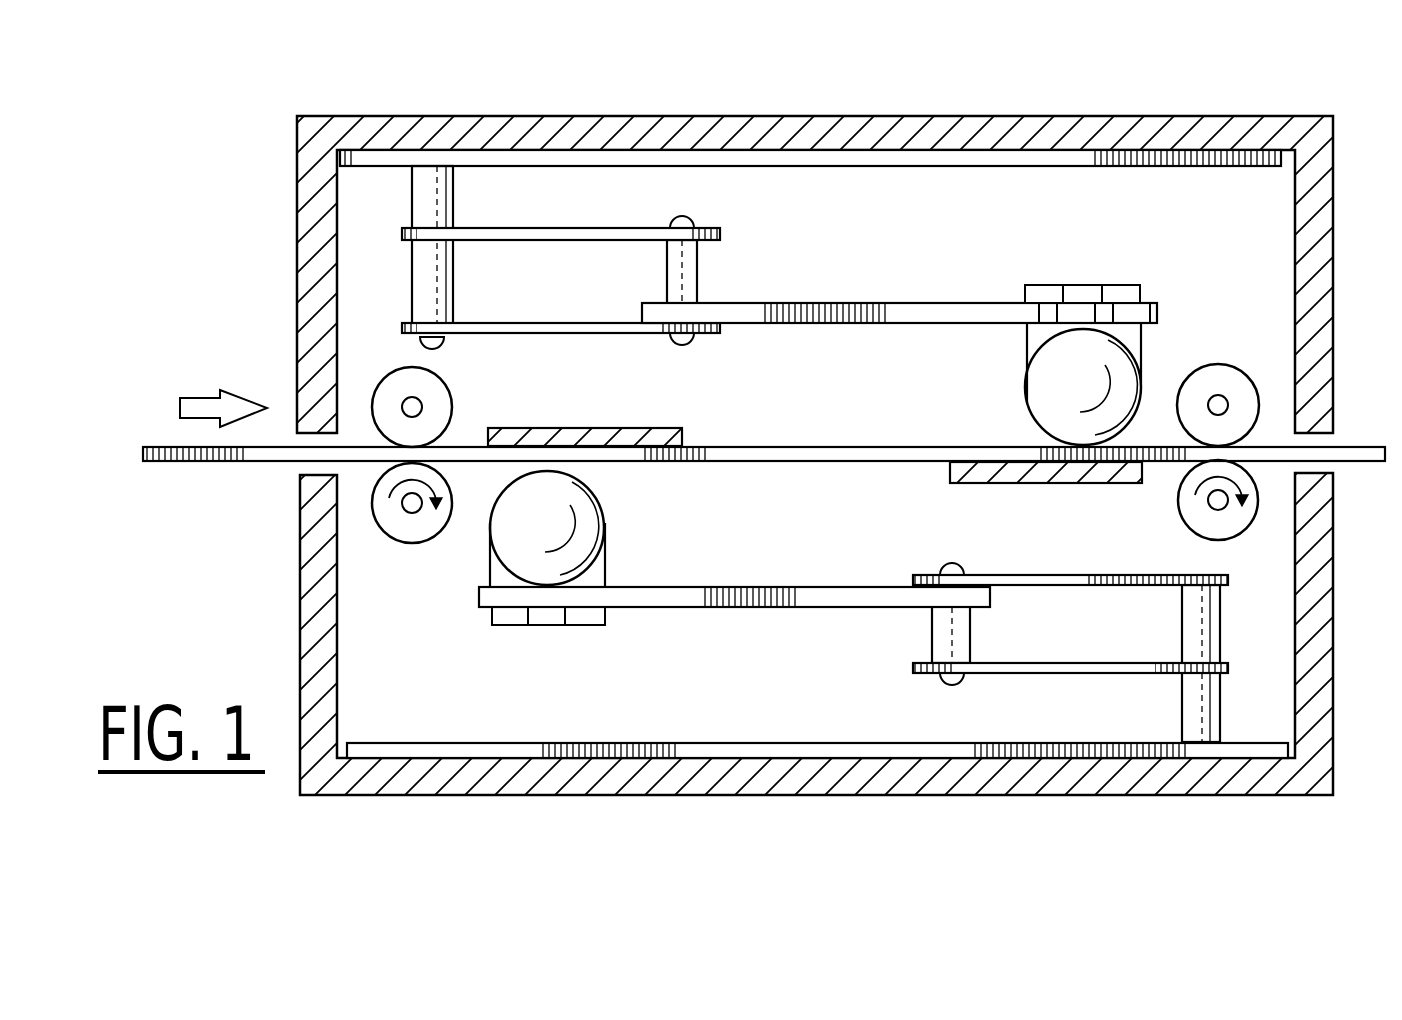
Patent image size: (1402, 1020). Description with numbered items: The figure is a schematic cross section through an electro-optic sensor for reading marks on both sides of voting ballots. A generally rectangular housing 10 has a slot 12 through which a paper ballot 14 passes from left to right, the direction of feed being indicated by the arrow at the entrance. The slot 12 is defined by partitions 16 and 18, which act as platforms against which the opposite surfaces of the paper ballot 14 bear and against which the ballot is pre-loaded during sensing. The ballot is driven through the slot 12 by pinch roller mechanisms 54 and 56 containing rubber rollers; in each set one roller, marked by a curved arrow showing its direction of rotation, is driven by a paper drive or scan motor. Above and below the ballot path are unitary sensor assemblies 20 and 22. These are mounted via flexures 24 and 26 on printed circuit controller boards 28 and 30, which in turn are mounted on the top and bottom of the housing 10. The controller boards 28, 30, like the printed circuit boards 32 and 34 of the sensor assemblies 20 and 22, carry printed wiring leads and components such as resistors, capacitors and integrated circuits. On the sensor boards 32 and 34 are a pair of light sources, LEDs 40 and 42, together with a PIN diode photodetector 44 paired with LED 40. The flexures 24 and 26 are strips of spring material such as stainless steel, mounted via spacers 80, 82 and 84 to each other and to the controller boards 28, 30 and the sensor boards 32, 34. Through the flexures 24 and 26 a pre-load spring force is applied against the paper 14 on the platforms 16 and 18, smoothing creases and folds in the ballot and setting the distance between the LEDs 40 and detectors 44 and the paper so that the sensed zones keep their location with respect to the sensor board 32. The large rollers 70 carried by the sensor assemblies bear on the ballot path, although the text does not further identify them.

The housing 10 is at (252, 213).
The slot 12 is at (310, 437).
The paper ballot 14 is at (242, 462).
The partition 16 is at (655, 428).
The partition 18 is at (980, 483).
The sensor assembly 20 is at (810, 415).
The sensor assembly 22 is at (817, 645).
The flexure 24 is at (538, 257).
The flexure 26 is at (1104, 643).
The printed circuit controller board 28 is at (843, 165).
The printed circuit controller board 30 is at (907, 742).
The printed circuit board 32 is at (896, 326).
The printed circuit board 34 is at (752, 587).
The light source (LED) 40 is at (1039, 285).
The light source (LED) 42 is at (583, 628).
The PIN diode photodetector 44 is at (1092, 285).
The pinch roller mechanism 54 is at (460, 420).
The pinch roller mechanism 56 is at (1243, 364).
The roller 70 is at (1046, 402).
The spacer 80 is at (412, 272).
The spacer 82 is at (658, 267).
The spacer 84 is at (453, 195).